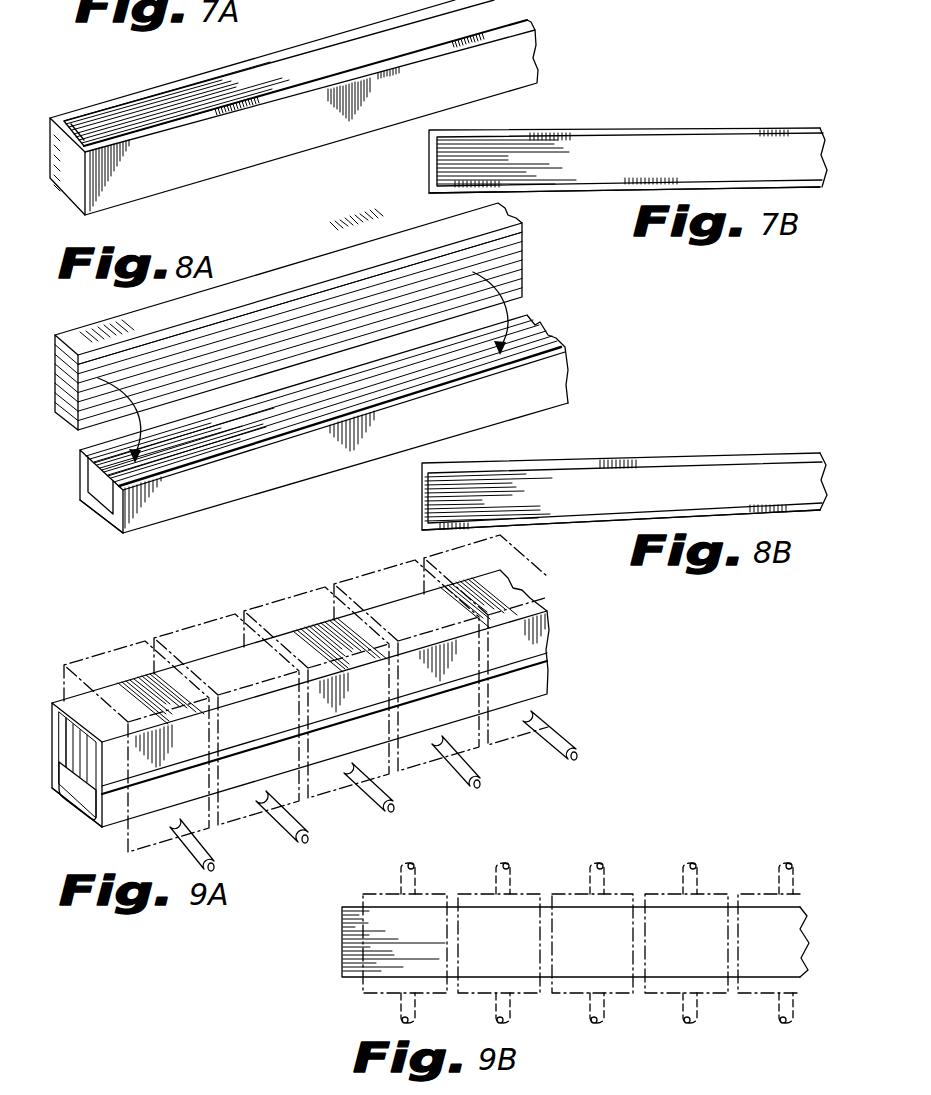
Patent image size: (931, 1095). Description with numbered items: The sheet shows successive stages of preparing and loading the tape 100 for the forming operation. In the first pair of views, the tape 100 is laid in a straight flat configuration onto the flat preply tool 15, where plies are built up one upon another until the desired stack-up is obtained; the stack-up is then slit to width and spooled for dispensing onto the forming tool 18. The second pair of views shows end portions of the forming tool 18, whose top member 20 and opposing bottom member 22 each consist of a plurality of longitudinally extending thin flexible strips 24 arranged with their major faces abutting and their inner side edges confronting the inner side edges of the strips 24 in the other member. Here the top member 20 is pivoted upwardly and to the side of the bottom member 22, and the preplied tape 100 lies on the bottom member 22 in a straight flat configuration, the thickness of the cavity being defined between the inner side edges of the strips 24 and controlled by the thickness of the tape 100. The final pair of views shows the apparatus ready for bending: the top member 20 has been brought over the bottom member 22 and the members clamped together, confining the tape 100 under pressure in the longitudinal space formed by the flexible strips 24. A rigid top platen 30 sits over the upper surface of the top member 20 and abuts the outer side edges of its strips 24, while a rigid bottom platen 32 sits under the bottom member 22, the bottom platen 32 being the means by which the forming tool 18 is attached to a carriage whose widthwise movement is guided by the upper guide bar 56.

In FIG. 7A, the preply tool 15 is at (240, 157).
In FIG. 7B, the preply tool 15 is at (612, 196).
In FIG. 7A, the tape 100 is at (287, 70).
In FIG. 7B, the tape 100 is at (683, 148).
In FIG. 8A, the tape 100 is at (352, 399).
In FIG. 8B, the tape 100 is at (668, 502).
In FIG. 9A, the tape 100 is at (92, 805).
In FIG. 8A, the forming tool 18 is at (72, 445).
In FIG. 8A, the top member 20 is at (534, 275).
In FIG. 9A, the top member 20 is at (541, 639).
In FIG. 9B, the top member 20 is at (348, 982).
In FIG. 8A, the bottom member 22 is at (575, 345).
In FIG. 8B, the bottom member 22 is at (728, 450).
In FIG. 9A, the bottom member 22 is at (548, 680).
In FIG. 8A, the flexible strips 24 is at (296, 318).
In FIG. 9A, the flexible strips 24 is at (49, 745).
In FIG. 9A, the top platen 30 is at (201, 640).
In FIG. 9B, the top platen 30 is at (428, 892).
In FIG. 9A, the bottom platen 32 is at (525, 745).
In FIG. 9A, the upper guide bar 56 is at (349, 806).
In FIG. 9B, the upper guide bar 56 is at (600, 870).